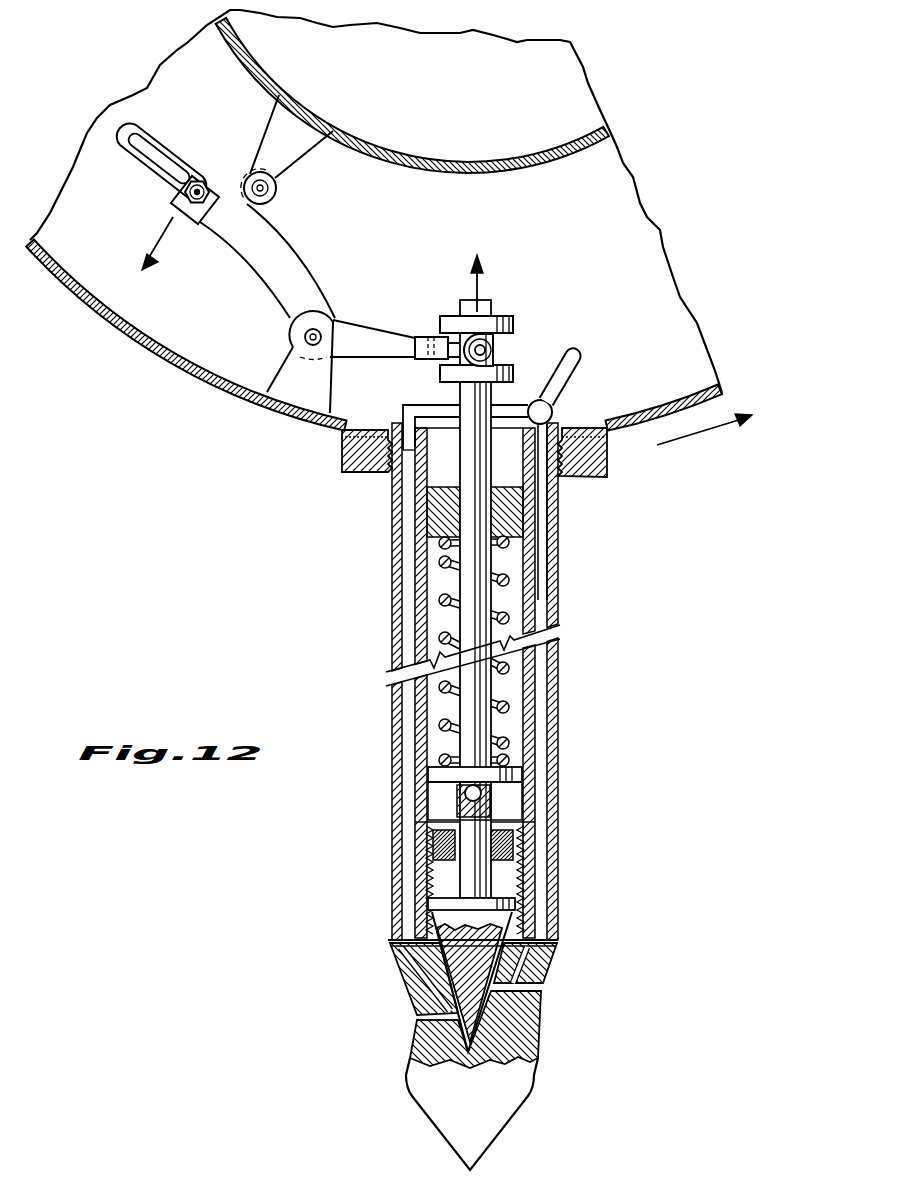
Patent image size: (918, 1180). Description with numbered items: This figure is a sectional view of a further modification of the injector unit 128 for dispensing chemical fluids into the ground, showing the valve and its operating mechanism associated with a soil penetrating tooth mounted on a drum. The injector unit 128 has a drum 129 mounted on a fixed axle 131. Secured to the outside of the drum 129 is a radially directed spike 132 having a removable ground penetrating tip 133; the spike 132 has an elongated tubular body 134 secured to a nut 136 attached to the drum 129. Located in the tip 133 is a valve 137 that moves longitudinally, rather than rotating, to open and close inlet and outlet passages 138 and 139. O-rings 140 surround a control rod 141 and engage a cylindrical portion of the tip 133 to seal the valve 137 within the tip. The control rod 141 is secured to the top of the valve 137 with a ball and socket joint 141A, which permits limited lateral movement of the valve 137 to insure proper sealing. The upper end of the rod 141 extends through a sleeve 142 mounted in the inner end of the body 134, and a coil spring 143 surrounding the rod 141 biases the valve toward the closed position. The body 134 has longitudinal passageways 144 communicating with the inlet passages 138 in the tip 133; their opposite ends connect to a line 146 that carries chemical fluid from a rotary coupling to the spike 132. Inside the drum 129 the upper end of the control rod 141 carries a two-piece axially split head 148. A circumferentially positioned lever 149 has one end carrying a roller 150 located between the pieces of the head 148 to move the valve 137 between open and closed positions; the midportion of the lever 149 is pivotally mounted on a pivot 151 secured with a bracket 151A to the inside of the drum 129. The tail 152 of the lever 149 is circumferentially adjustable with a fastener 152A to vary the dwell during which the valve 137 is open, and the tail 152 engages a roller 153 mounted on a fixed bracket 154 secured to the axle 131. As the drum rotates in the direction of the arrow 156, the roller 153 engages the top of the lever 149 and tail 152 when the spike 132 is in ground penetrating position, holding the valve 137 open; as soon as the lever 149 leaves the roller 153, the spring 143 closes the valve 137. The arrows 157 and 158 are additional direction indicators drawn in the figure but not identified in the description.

The injector unit 128 is at (172, 461).
The drum 129 is at (633, 427).
The fixed axle 131 is at (543, 157).
The spike 132 is at (572, 572).
The ground penetrating tip 133 is at (500, 1100).
The tubular body 134 is at (560, 660).
The nut 136 is at (580, 467).
The valve 137 is at (473, 970).
The inlet passage 138 is at (530, 963).
The outlet passage 139 is at (520, 1023).
The O-rings 140 is at (530, 838).
The control rod 141 is at (465, 622).
The ball and socket joint 141A is at (487, 793).
The sleeve 142 is at (437, 510).
The coil spring 143 is at (440, 688).
The longitudinal passageways 144 is at (407, 645).
The line 146 is at (565, 377).
The two-piece axially split head 148 is at (498, 316).
The lever 149 is at (273, 253).
The roller 150 is at (493, 350).
The pivot 151 is at (328, 322).
The bracket 151A is at (280, 373).
The tail 152 is at (145, 168).
The fastener 152A is at (198, 182).
The roller 153 is at (238, 182).
The fixed bracket 154 is at (302, 132).
The arrow 156 is at (703, 437).
The direction arrow 157 is at (160, 238).
The direction arrow 158 is at (462, 285).